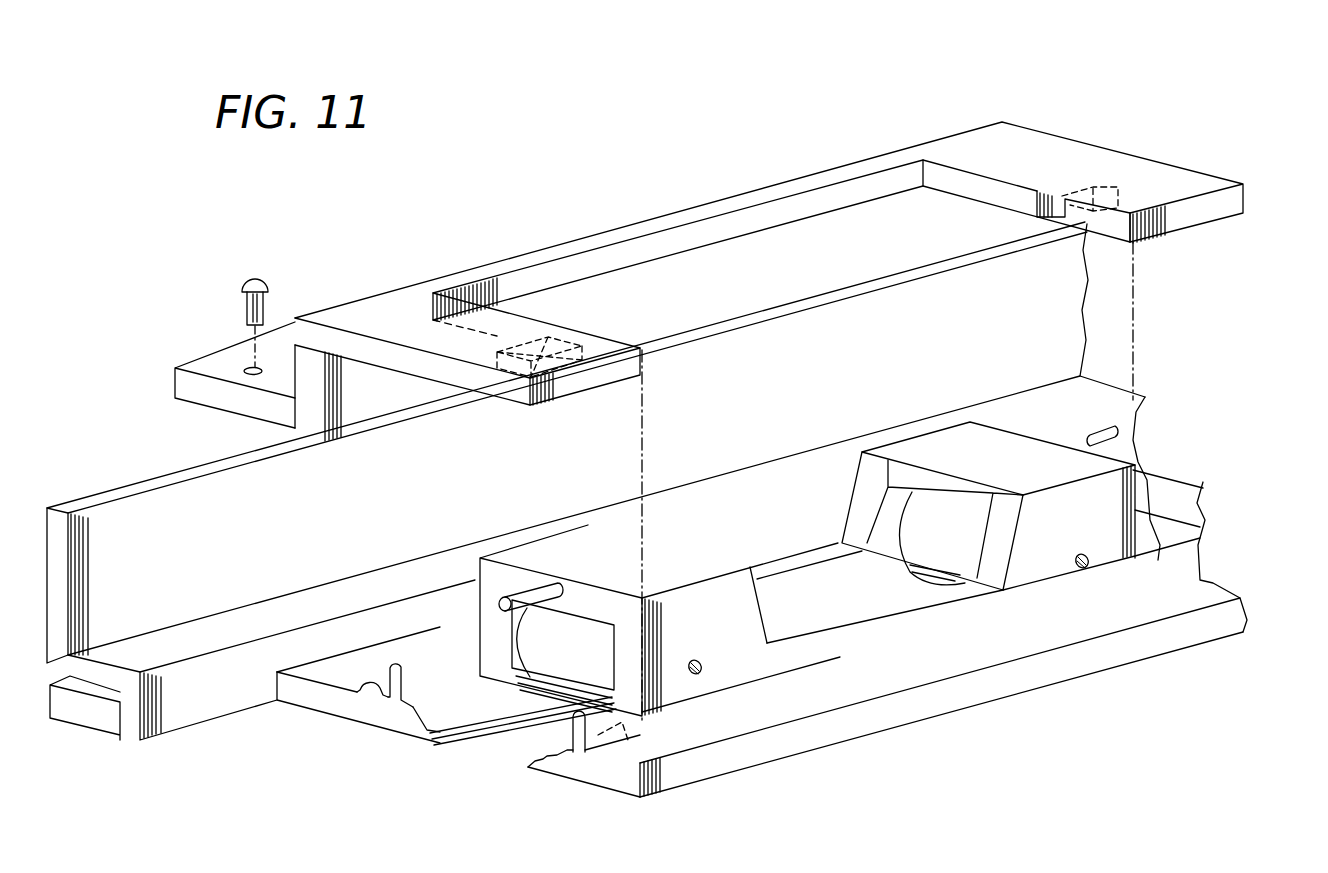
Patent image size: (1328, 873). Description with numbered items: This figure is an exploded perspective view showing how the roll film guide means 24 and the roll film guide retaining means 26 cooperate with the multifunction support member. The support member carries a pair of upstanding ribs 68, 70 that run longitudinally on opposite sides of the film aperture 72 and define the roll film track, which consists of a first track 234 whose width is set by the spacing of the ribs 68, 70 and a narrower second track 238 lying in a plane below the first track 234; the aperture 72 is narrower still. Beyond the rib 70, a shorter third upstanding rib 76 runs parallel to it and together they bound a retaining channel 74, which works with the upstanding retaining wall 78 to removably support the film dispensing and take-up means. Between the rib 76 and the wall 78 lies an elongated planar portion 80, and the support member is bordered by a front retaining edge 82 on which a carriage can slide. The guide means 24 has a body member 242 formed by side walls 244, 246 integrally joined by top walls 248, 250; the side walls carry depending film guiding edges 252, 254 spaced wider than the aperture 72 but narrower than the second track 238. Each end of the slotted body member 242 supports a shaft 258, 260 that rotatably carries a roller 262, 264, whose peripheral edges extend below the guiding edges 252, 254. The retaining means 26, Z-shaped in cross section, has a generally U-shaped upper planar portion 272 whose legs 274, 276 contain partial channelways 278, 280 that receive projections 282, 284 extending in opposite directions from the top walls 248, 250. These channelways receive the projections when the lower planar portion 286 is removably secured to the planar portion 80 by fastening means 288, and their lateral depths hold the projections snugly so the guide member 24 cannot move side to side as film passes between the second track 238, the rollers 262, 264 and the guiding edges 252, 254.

The roll film guide means 24 is at (964, 598).
The roll film guide retaining means 26 is at (340, 283).
The upstanding rib 68 is at (750, 690).
The upstanding rib 70 is at (440, 657).
The aperture 72 is at (500, 760).
The retaining channel 74 is at (378, 696).
The third upstanding rib 76 is at (360, 688).
The upstanding retaining wall 78 is at (100, 496).
The elongated planar portion 80 is at (340, 668).
The front retaining edge 82 is at (657, 777).
The first track 234 is at (407, 710).
The second track 238 is at (433, 748).
The body member 242 is at (917, 625).
The side wall 244 is at (812, 643).
The side wall 246 is at (773, 567).
The top wall 248 is at (530, 552).
The top wall 250 is at (1000, 471).
The film guiding edge 252 is at (600, 757).
The film guiding edge 254 is at (525, 713).
The shaft 258 is at (700, 664).
The shaft 260 is at (1107, 537).
The roller 262 is at (612, 655).
The roller 264 is at (912, 548).
The upper planar portion 272 is at (400, 300).
The leg 274 is at (482, 380).
The leg 276 is at (1235, 196).
The partial channelway 278 is at (562, 338).
The partial channelway 280 is at (1047, 212).
The projection 282 is at (543, 587).
The projection 284 is at (1110, 436).
The lower planar portion 286 is at (238, 400).
The fastening means 288 is at (240, 287).